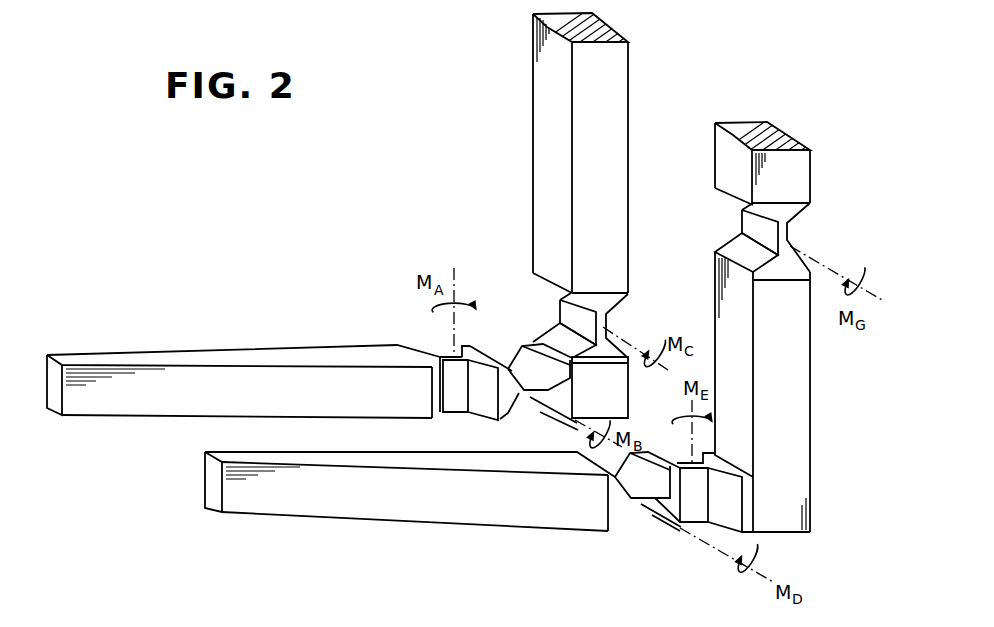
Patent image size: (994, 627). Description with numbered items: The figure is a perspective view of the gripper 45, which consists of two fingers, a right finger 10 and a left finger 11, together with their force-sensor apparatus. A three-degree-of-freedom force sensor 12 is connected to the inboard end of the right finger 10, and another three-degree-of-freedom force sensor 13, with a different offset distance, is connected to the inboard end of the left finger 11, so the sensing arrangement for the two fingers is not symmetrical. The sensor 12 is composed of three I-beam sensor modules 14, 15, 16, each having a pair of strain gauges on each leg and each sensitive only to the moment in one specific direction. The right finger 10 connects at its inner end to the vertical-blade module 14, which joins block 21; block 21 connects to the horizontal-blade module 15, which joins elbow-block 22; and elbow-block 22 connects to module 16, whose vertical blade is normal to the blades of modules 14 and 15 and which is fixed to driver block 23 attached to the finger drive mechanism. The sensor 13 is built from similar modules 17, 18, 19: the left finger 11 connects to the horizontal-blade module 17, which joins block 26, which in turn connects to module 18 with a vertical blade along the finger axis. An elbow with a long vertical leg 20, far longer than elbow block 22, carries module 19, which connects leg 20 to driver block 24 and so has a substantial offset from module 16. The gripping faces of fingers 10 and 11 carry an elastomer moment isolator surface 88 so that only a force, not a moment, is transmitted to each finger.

The right finger 10 is at (237, 352).
The left finger 11 is at (447, 519).
The three-degree-of-freedom force sensor 12 is at (463, 204).
The three-degree-of-freedom force sensor 13 is at (850, 540).
The sensor module 14 is at (441, 356).
The sensor module 15 is at (521, 394).
The sensor module 16 is at (605, 322).
The sensor module 17 is at (640, 507).
The sensor module 18 is at (690, 466).
The sensor module 19 is at (790, 233).
The vertical leg 20 is at (812, 425).
The block 21 is at (471, 347).
The elbow-block 22 is at (616, 399).
The driver block 23 is at (618, 86).
The driver block 24 is at (809, 176).
The block 26 is at (680, 527).
The gripper 45 is at (87, 494).
The moment isolator surface 88 is at (126, 407).